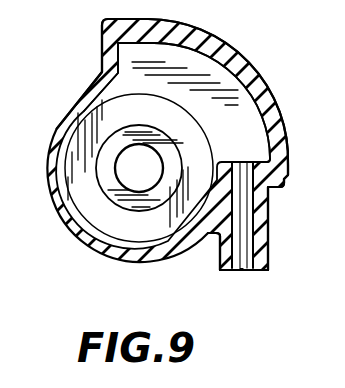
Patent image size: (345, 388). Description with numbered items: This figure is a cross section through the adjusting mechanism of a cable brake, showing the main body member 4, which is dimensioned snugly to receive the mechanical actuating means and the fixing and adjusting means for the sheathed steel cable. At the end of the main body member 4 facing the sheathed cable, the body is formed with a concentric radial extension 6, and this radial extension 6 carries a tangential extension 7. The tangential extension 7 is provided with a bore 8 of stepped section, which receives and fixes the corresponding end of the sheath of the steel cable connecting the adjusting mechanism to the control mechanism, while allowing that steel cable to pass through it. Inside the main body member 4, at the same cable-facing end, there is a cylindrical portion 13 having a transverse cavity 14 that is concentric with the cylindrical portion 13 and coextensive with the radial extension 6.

The main body member 4 is at (83, 246).
The concentric radial extension 6 is at (280, 104).
The tangential extension 7 is at (270, 231).
The bore 8 is at (245, 273).
The cylindrical portion 13 is at (85, 98).
The transverse cavity 14 is at (208, 72).